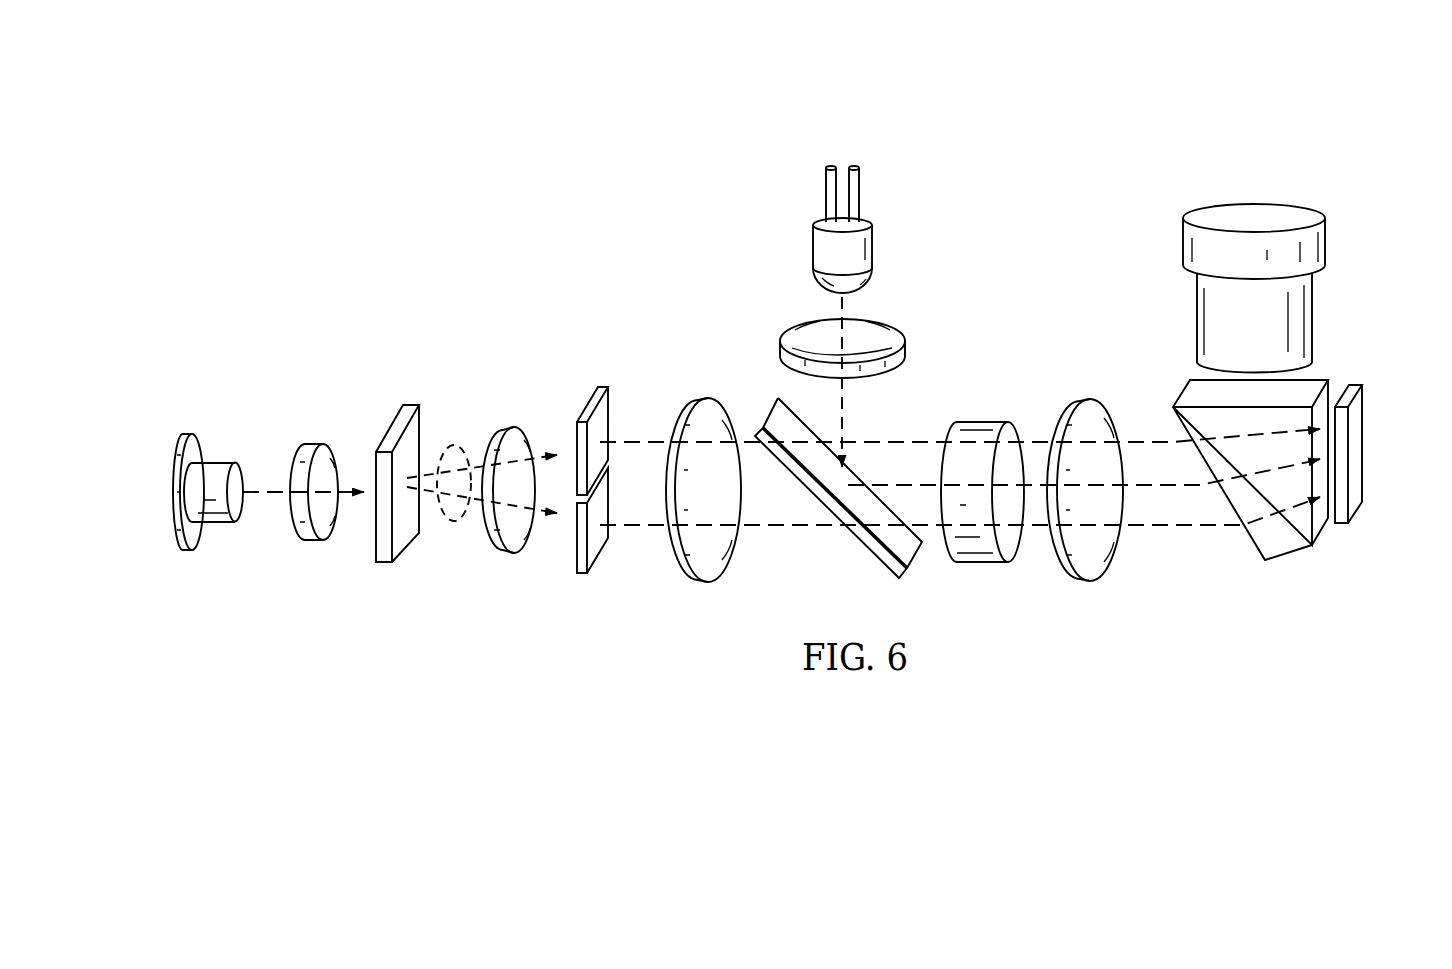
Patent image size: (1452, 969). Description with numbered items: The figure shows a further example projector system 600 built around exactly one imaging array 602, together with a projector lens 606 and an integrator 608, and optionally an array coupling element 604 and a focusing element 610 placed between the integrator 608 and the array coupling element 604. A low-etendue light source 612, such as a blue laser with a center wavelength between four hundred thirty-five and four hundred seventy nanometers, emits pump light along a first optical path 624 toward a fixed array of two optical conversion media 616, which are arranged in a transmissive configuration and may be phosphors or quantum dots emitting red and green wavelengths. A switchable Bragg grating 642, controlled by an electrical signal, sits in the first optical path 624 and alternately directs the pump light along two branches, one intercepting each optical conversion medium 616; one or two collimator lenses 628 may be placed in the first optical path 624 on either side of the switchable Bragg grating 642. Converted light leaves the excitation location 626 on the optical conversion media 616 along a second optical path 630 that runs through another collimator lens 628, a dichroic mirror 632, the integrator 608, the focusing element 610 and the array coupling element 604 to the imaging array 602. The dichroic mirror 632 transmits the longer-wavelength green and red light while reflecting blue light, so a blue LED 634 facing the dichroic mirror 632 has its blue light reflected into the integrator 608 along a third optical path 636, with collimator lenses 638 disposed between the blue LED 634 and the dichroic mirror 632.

The projector system 600 is at (570, 274).
The imaging array 602 is at (1363, 436).
The array coupling element 604 is at (1290, 556).
The projector lens 606 is at (1315, 319).
The integrator 608 is at (982, 563).
The focusing element 610 is at (1084, 584).
The low-etendue light source 612 is at (172, 492).
The optical conversion media 616 is at (579, 405).
The first optical path 624 is at (267, 480).
The excitation location 626 is at (607, 431).
The collimator lens 628 is at (317, 543).
The second optical path 630 is at (1152, 432).
The dichroic mirror 632 is at (870, 549).
The blue LED 634 is at (875, 249).
The third optical path 636 is at (855, 402).
The collimator lenses 638 is at (905, 348).
The switchable Bragg grating 642 is at (387, 565).